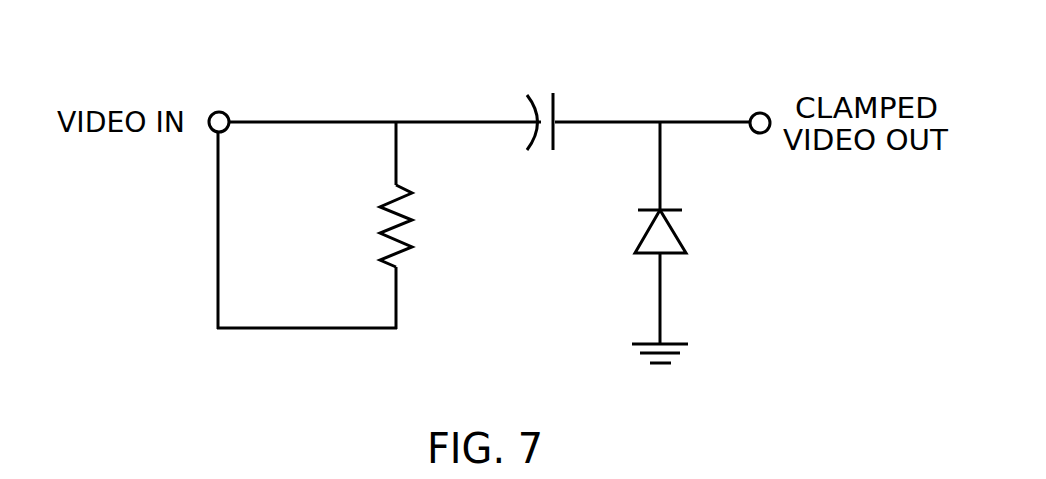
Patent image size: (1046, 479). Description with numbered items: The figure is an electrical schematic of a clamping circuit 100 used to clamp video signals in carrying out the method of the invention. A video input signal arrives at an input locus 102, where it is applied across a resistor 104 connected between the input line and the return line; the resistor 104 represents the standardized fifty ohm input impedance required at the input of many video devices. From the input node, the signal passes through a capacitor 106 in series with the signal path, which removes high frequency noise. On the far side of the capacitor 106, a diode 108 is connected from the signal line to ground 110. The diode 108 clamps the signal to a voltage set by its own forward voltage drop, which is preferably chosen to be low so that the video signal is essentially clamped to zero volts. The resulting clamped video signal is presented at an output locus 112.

The clamping circuit 100 is at (830, 418).
The input locus 102 is at (226, 111).
The resistor 104 is at (410, 221).
The capacitor 106 is at (527, 95).
The diode 108 is at (680, 238).
The ground 110 is at (703, 334).
The output locus 112 is at (753, 115).